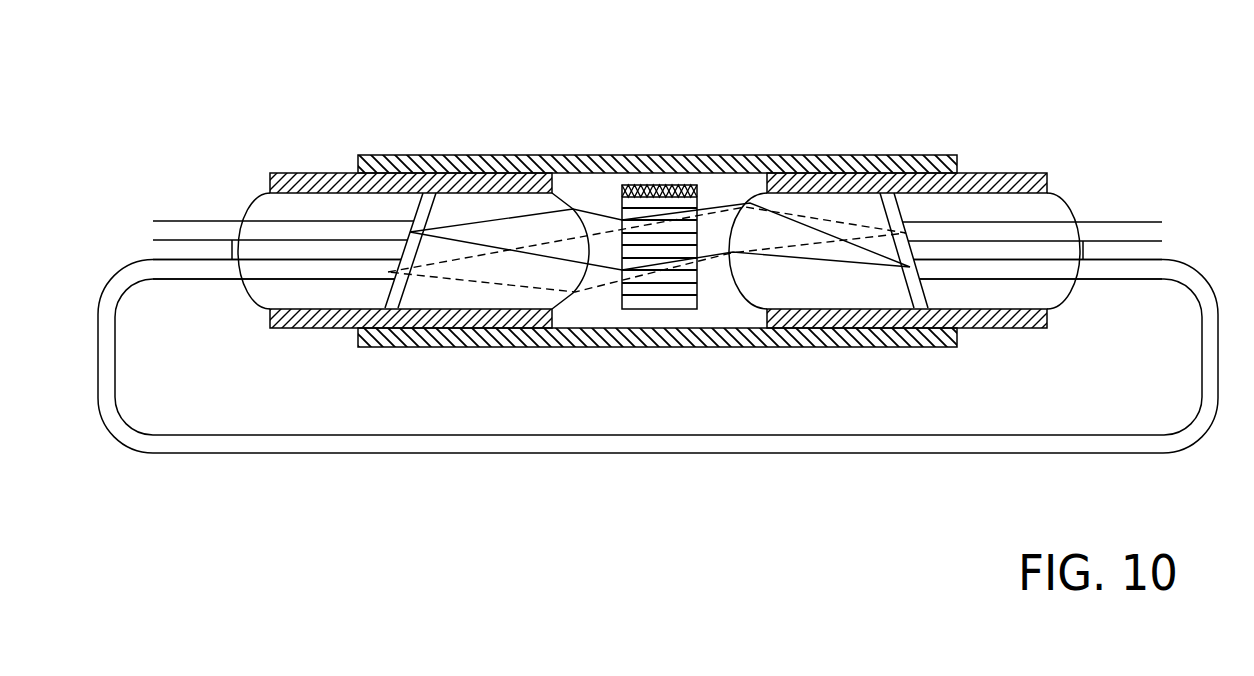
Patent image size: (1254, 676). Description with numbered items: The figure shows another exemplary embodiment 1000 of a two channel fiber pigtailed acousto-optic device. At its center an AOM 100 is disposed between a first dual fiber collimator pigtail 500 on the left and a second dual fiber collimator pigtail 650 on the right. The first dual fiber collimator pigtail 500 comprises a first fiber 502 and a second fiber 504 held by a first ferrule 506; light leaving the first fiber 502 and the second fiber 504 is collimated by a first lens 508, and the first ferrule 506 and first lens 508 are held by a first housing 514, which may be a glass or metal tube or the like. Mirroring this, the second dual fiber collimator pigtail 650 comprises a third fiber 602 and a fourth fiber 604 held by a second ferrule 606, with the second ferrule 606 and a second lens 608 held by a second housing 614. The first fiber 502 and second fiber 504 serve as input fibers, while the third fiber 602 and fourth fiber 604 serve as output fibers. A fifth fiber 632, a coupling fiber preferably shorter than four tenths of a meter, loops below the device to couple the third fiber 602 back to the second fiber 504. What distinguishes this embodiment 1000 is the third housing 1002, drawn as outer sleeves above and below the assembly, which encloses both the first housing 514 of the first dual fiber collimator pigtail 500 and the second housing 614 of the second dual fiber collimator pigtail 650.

The embodiment 1000 is at (258, 82).
The third housing 1002 is at (588, 155).
The AOM 100 is at (704, 282).
The first dual fiber collimator pigtail 500 is at (236, 166).
The first fiber 502 is at (192, 221).
The second fiber 504 is at (193, 280).
The first ferrule 506 is at (250, 300).
The first lens 508 is at (476, 223).
The first housing 514 is at (287, 173).
The second dual fiber collimator pigtail 650 is at (1045, 143).
The third fiber 602 is at (1123, 282).
The fourth fiber 604 is at (1123, 222).
The second ferrule 606 is at (1067, 295).
The second lens 608 is at (821, 298).
The second housing 614 is at (996, 172).
The fifth fiber 632 is at (1035, 435).